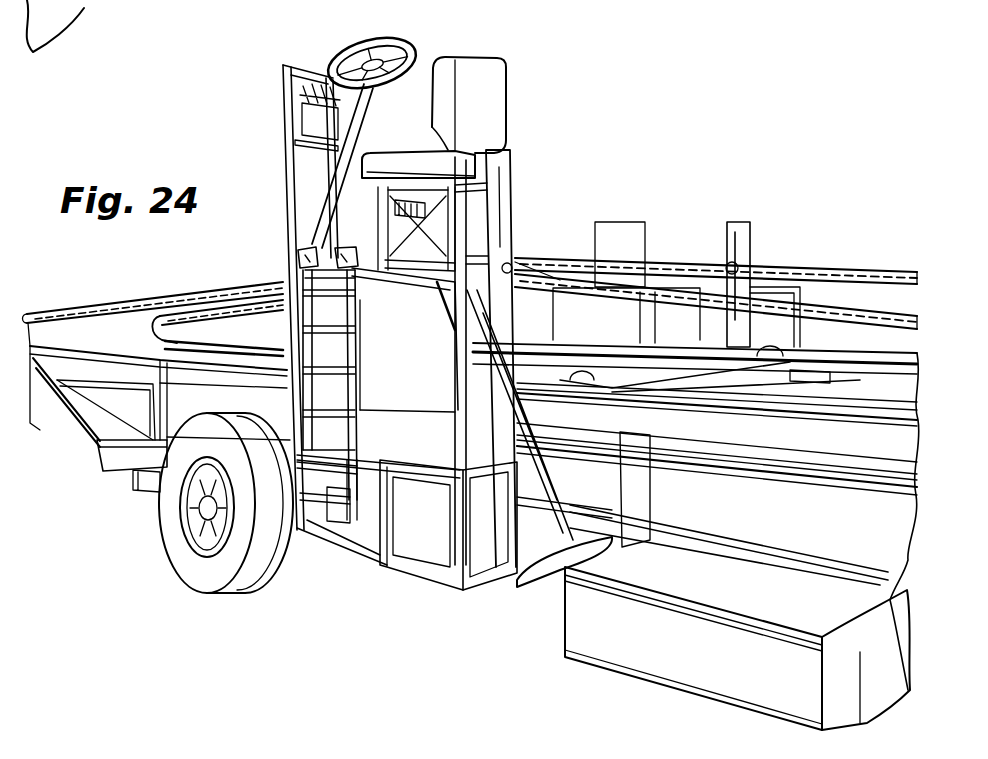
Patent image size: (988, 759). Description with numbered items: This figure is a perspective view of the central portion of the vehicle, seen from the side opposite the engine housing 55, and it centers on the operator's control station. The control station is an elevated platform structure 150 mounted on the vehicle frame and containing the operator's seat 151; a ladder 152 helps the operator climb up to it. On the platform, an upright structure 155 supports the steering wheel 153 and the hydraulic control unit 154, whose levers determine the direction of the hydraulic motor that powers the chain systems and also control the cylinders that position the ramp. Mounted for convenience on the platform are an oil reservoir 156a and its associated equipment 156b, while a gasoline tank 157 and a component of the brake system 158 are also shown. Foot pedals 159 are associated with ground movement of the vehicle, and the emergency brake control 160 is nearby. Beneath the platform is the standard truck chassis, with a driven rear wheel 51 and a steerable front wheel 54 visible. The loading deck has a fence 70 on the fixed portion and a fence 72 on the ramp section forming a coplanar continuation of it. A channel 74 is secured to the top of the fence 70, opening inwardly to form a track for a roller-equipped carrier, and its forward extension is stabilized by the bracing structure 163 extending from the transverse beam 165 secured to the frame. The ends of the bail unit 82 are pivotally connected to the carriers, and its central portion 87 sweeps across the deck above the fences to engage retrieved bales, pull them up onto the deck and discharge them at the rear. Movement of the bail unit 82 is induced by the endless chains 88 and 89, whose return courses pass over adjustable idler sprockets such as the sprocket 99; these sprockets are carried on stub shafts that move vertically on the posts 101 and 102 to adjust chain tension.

The driven wheel 51 is at (80, 0).
The steerable wheel 54 is at (157, 520).
The housing 55 is at (555, 327).
The fence 70 is at (167, 365).
The fence 72 is at (43, 430).
The channel 74 is at (27, 342).
The bail unit 82 is at (857, 367).
The central portion of the bail 87 is at (763, 377).
The endless chain 88 is at (137, 303).
The endless chain 89 is at (877, 273).
The adjustable idler sprocket 99 is at (518, 265).
The post 101 is at (517, 200).
The post 102 is at (752, 226).
The elevated platform structure 150 is at (390, 283).
The operator's seat 151 is at (503, 92).
The ladder 152 is at (360, 380).
The steering wheel 153 is at (395, 48).
The hydraulic control unit 154 is at (298, 118).
The upright structure 155 is at (293, 143).
The oil reservoir 156a is at (425, 545).
The associated equipment 156b is at (370, 523).
The gasoline tank 157 is at (578, 648).
The brake system component 158 is at (517, 583).
The foot pedals 159 is at (300, 262).
The emergency brake control 160 is at (375, 203).
The bracing structure 163 is at (83, 458).
The transverse beam 165 is at (117, 480).